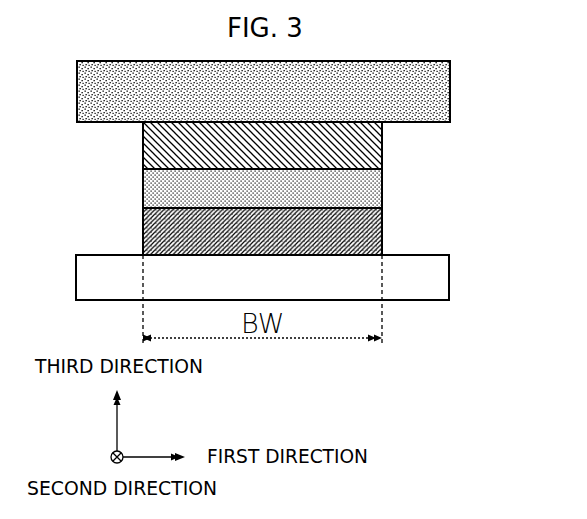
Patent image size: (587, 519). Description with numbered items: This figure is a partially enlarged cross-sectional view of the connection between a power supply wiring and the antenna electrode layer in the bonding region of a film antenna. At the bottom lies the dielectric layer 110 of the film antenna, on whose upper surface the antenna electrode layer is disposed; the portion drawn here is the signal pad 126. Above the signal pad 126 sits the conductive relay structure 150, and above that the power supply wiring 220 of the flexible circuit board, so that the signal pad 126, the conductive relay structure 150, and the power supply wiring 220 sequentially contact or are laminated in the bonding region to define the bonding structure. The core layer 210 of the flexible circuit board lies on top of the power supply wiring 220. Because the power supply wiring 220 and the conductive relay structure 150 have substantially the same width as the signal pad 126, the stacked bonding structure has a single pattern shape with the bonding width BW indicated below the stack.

The core layer 210 is at (442, 87).
The power supply wiring 220 is at (382, 140).
The conductive relay structure 150 is at (382, 183).
The signal pad 126 is at (382, 228).
The dielectric layer 110 is at (443, 273).